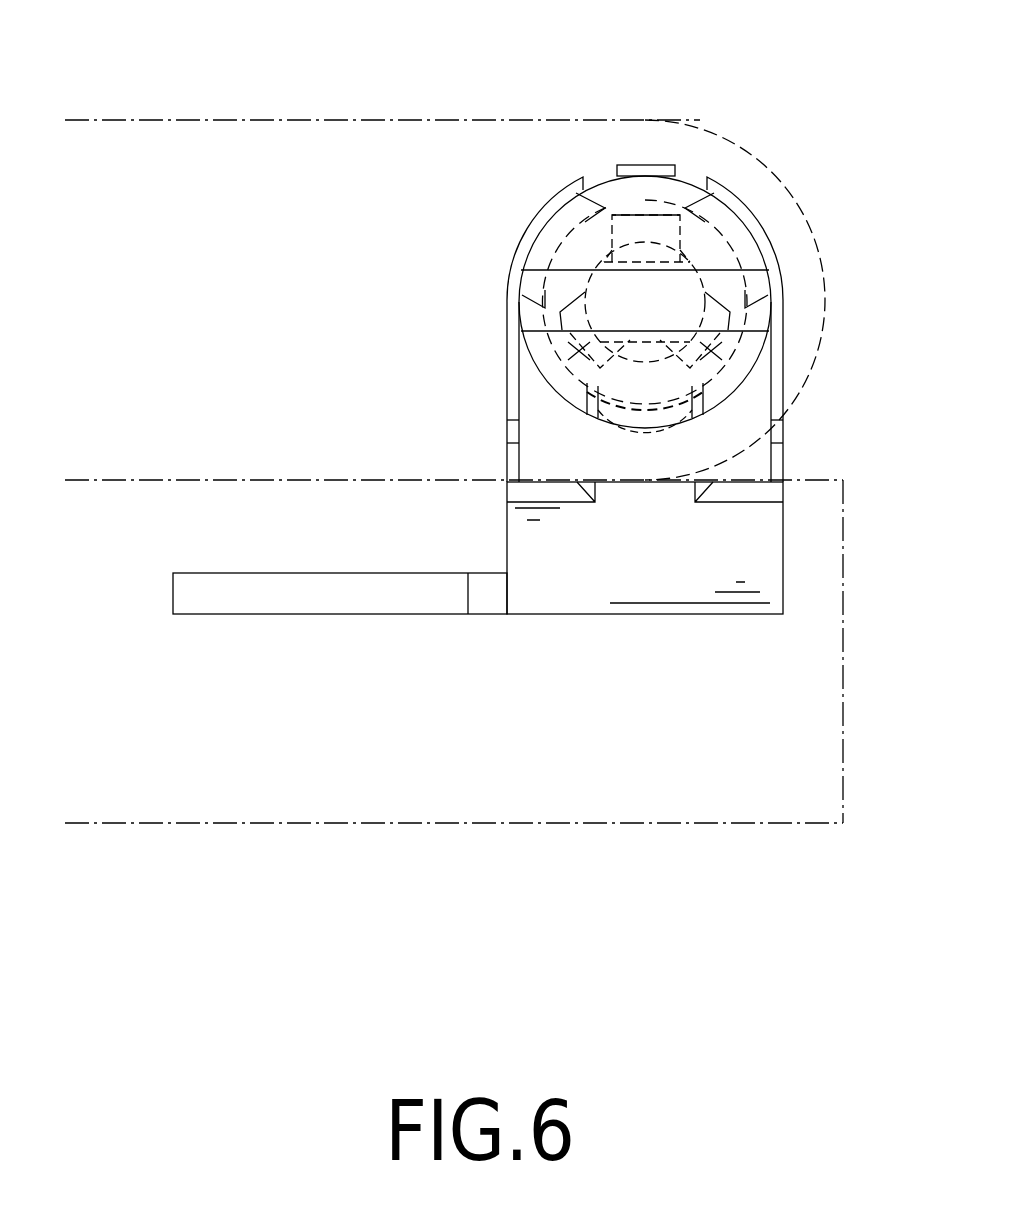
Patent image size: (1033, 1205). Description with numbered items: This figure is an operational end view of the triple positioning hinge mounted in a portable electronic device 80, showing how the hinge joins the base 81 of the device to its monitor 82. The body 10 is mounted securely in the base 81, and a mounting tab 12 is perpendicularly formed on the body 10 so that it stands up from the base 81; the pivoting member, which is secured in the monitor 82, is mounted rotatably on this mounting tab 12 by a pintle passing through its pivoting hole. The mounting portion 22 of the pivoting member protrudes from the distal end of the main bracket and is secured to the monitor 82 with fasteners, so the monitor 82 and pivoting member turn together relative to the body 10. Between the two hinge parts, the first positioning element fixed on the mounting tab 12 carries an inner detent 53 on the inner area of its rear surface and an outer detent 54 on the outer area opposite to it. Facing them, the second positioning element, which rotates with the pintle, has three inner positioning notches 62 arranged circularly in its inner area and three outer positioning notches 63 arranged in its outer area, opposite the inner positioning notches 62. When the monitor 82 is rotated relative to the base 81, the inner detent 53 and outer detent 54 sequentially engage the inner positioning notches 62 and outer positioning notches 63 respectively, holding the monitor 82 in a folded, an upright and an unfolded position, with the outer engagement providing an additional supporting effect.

The body 10 is at (353, 602).
The mounting tab 12 is at (760, 458).
The mounting portion 22 is at (790, 276).
The inner detent 53 is at (652, 215).
The outer detent 54 is at (640, 422).
The inner positioning notches 62 is at (590, 338).
The outer positioning notches 63 is at (735, 218).
The portable electronic device 80 is at (762, 113).
The base 81 is at (527, 802).
The monitor 82 is at (400, 132).